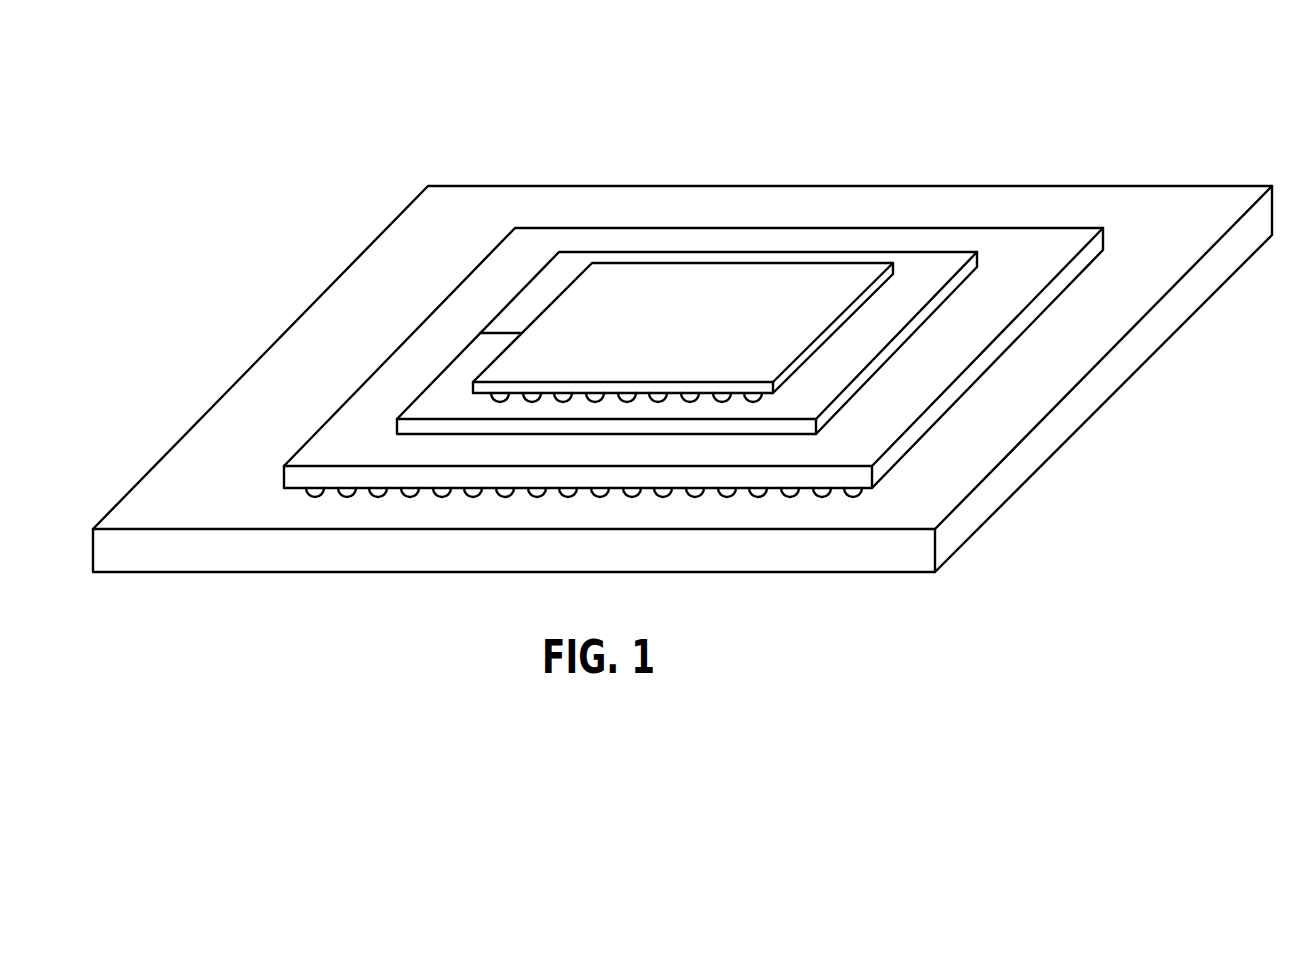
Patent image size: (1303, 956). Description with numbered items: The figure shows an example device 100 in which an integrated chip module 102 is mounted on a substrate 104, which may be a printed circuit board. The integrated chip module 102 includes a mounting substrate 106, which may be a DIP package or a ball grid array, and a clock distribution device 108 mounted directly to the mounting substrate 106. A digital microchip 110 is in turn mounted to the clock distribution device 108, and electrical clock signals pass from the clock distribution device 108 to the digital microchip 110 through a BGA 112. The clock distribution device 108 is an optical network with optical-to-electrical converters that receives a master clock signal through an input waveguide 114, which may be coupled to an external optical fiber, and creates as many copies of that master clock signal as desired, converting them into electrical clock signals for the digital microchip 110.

The device 100 is at (428, 133).
The integrated chip module 102 is at (1038, 221).
The substrate 104 is at (167, 477).
The mounting substrate 106 is at (431, 358).
The clock distribution device 108 is at (893, 315).
The digital microchip 110 is at (613, 283).
The BGA 112 is at (694, 398).
The input waveguide 114 is at (517, 332).